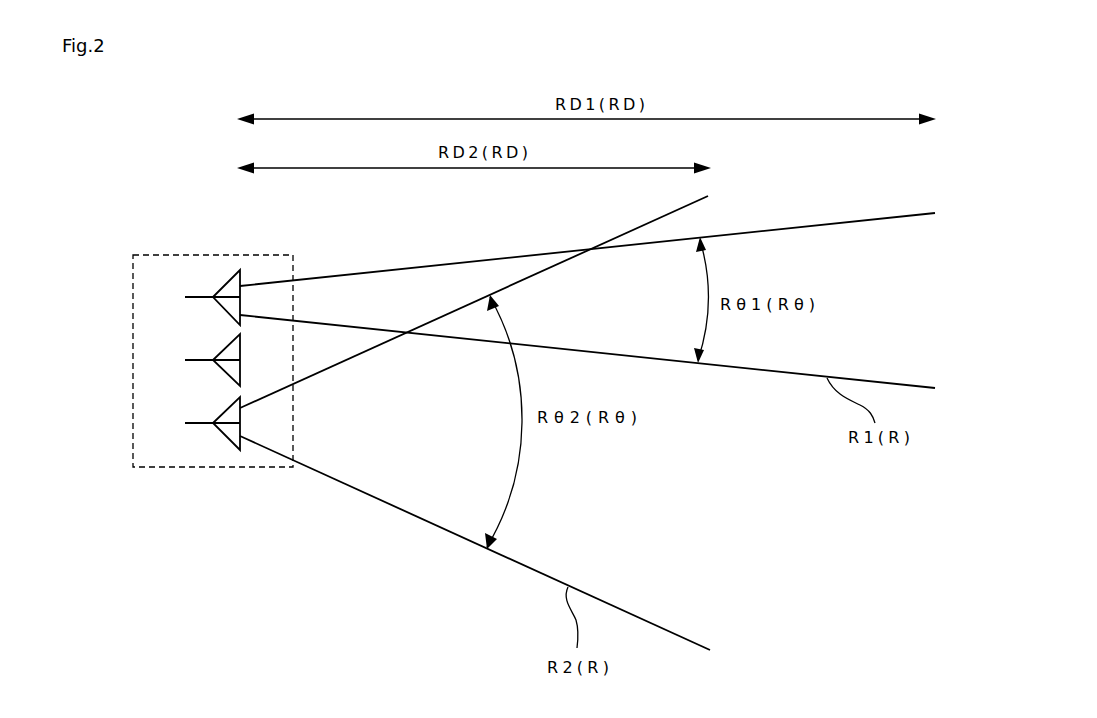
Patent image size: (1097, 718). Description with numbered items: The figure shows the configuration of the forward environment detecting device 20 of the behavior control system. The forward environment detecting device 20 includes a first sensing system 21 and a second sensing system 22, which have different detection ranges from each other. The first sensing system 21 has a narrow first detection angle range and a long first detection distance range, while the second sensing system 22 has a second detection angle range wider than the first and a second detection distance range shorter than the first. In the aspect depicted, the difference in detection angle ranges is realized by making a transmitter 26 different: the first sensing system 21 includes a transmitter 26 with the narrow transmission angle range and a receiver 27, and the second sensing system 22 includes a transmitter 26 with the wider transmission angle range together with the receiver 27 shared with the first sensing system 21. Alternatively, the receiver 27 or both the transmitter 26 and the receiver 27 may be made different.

The forward environment detecting device 20 is at (212, 215).
The first sensing system 21 is at (162, 265).
The second sensing system 22 is at (162, 458).
The transmitter 26 is at (224, 282).
The receiver 27 is at (227, 354).